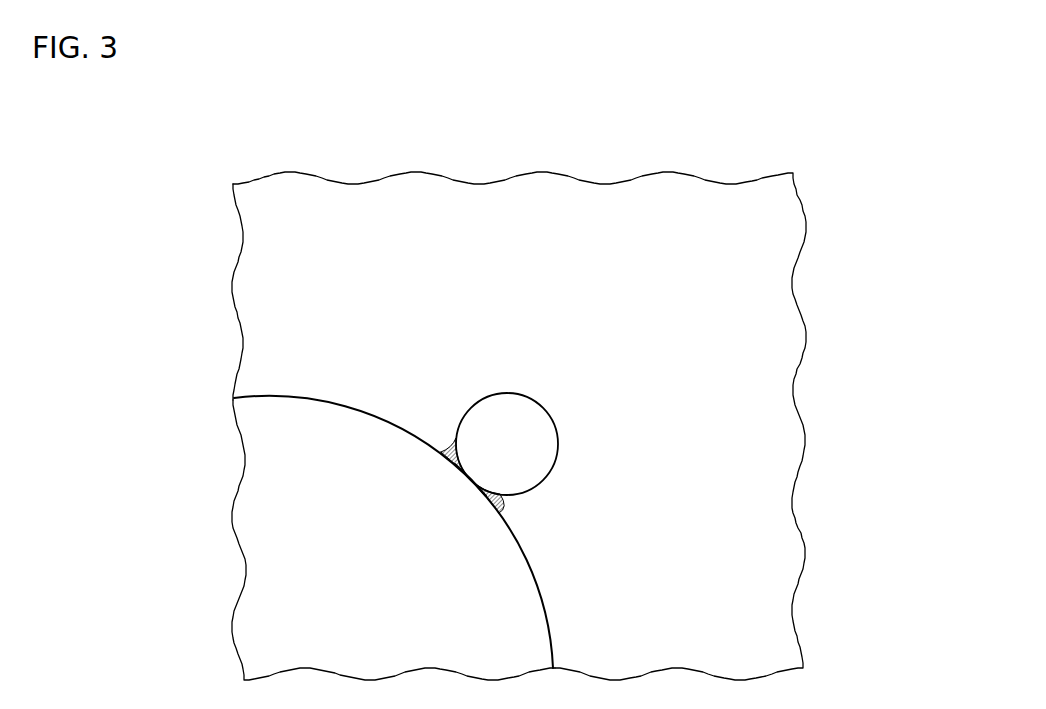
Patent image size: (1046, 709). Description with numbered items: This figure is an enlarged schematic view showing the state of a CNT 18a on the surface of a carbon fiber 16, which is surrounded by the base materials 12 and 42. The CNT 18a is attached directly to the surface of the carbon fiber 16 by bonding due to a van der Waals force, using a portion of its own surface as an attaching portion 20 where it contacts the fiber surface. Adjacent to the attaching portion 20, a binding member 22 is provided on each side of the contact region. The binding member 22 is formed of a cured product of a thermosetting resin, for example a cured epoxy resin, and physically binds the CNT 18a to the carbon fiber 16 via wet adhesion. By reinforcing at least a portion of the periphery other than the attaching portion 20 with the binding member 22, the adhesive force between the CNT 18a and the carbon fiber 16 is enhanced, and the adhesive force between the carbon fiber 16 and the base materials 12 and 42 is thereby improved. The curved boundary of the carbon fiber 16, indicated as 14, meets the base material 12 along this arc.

The base material 12 is at (459, 426).
The base material 42 is at (293, 274).
The arcuate edge 14 is at (556, 593).
The carbon fiber 16 is at (292, 523).
The CNT 18a is at (494, 417).
The attaching portion 20 is at (471, 480).
The binding member 22 is at (441, 451).